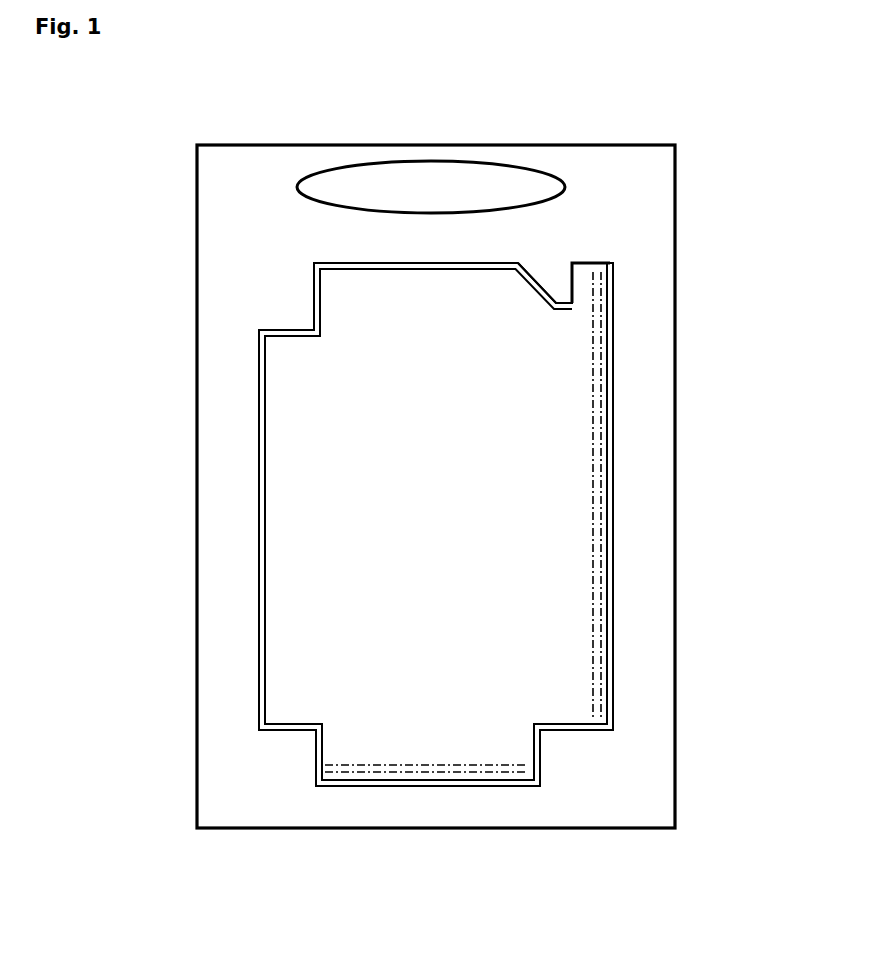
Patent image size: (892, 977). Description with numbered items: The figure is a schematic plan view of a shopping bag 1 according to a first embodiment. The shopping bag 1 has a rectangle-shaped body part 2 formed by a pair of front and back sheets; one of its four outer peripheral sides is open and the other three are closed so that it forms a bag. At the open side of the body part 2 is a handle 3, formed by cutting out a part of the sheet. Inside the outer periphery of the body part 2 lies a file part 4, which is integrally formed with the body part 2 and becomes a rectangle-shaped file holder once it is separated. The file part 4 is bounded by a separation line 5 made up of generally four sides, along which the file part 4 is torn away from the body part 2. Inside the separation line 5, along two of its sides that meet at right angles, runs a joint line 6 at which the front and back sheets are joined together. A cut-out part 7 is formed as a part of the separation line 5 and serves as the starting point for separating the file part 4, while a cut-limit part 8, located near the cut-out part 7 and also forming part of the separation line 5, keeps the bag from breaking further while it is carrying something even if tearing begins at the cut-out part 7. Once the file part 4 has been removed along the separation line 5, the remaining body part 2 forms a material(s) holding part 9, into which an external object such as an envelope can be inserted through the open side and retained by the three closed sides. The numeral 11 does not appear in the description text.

The shopping bag 1 is at (142, 155).
The body part 2 is at (612, 219).
The handle 3 is at (566, 185).
The file part 4 is at (308, 395).
The separation line 5 is at (613, 505).
The joint line 6 is at (608, 590).
The cut-out part 7 is at (612, 265).
The cut-limit part 8 is at (575, 303).
The material(s) holding part 9 is at (225, 561).
The bottom edge 11 is at (298, 745).